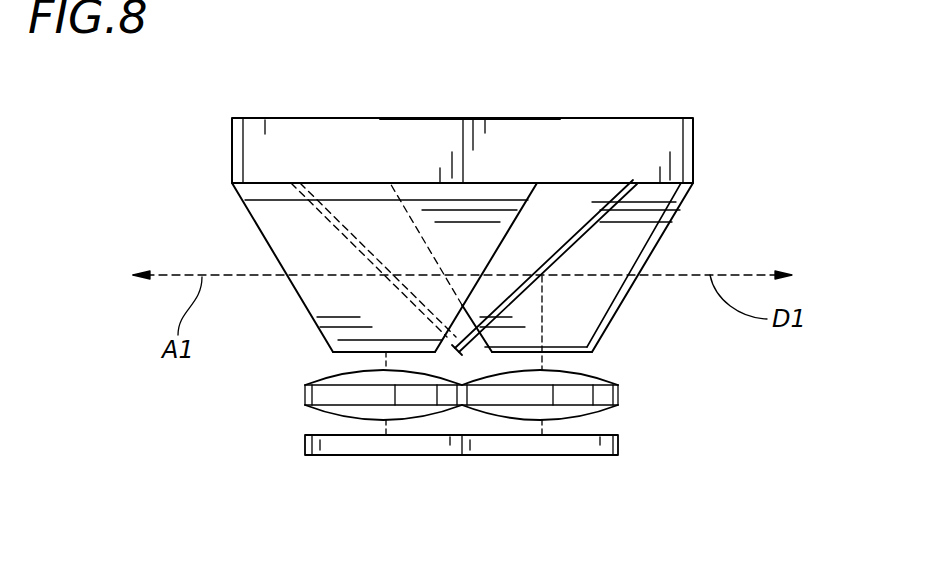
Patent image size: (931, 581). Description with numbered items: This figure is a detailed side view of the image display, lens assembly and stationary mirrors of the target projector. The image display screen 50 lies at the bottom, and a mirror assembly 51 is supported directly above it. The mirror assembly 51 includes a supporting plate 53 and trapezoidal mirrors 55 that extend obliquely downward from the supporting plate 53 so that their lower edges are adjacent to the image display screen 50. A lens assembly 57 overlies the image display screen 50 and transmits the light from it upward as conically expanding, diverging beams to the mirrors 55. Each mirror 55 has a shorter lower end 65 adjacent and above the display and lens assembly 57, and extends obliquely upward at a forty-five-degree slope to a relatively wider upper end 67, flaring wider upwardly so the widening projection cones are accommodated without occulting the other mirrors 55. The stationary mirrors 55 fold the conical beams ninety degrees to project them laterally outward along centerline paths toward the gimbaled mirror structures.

The image display screen 50 is at (620, 447).
The mirror assembly 51 is at (695, 135).
The supporting plate 53 is at (504, 130).
The mirror 55 is at (333, 203).
The lens assembly 57 is at (305, 393).
The lower end 65 is at (317, 327).
The upper end 67 is at (266, 196).